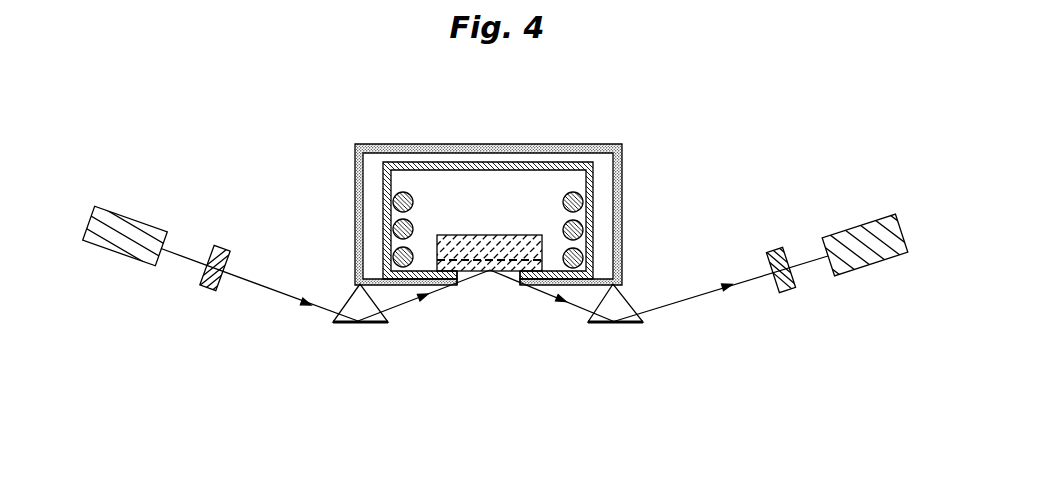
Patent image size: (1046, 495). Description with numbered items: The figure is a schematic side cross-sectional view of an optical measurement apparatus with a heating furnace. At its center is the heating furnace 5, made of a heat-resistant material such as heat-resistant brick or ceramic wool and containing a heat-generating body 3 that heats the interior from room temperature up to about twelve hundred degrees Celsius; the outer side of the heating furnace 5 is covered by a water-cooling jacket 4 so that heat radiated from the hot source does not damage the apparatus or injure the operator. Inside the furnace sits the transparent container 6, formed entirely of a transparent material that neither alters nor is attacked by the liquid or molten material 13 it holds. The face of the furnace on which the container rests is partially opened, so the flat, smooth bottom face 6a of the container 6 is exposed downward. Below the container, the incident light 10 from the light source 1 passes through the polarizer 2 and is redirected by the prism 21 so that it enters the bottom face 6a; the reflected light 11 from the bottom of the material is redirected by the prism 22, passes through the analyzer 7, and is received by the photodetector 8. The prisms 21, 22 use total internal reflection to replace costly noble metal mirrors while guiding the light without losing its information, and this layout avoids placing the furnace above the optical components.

The light source 1 is at (118, 212).
The polarizer 2 is at (220, 248).
The heat-generating body 3 is at (403, 192).
The water-cooling jacket 4 is at (573, 145).
The heating furnace 5 is at (593, 187).
The transparent container 6 is at (542, 246).
The bottom face 6a is at (505, 272).
The analyzer 7 is at (783, 296).
The photodetector 8 is at (862, 222).
The incident light 10 is at (281, 293).
The reflected light 11 is at (698, 296).
The liquid or molten material 13 is at (468, 262).
The prism 21 is at (383, 324).
The prism 22 is at (590, 324).